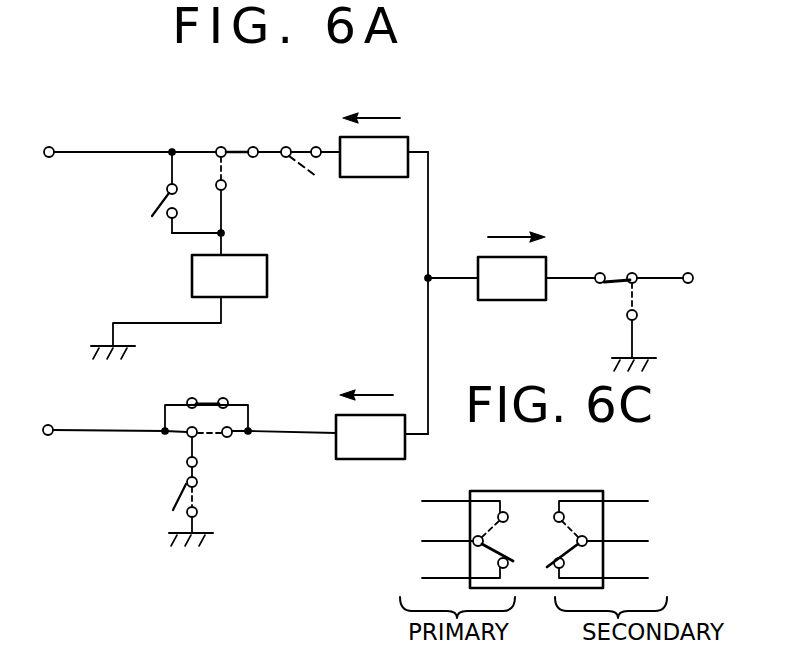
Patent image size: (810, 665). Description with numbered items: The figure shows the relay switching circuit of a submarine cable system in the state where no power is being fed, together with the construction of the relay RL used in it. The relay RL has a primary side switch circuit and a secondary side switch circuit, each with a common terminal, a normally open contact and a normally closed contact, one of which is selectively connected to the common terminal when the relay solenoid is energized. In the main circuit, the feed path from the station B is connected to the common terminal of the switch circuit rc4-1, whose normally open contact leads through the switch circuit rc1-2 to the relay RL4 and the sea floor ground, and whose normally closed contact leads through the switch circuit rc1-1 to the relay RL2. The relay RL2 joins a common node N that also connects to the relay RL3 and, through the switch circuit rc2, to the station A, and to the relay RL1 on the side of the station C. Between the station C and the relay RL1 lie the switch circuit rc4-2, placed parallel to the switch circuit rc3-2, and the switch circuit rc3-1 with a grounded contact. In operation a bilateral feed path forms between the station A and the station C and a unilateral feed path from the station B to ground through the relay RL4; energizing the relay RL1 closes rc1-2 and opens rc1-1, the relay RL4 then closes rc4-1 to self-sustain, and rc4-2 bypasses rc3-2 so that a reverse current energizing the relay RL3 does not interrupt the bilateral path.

In FIG. 6A, the relay RL1 is at (338, 424).
In FIG. 6A, the relay RL2 is at (384, 145).
In FIG. 6A, the relay RL3 is at (487, 266).
In FIG. 6A, the relay RL4 is at (179, 307).
In FIG. 6A, the switch circuit rc1-1 is at (256, 148).
In FIG. 6A, the secondary side switch circuit rc1-2 is at (147, 199).
In FIG. 6A, the switch circuit rc2 is at (619, 310).
In FIG. 6A, the switch circuit rc3-1 is at (184, 506).
In FIG. 6A, the secondary side switch circuit rc3-2 is at (222, 400).
In FIG. 6A, the switch circuit rc4-1 is at (232, 206).
In FIG. 6A, the secondary side switch circuit rc4-2 is at (195, 451).
In FIG. 6C, the relay RL is at (531, 524).
In FIG. 6A, the station A is at (713, 280).
In FIG. 6A, the station B is at (94, 153).
In FIG. 6A, the station C is at (87, 431).
In FIG. 6A, the node N is at (428, 278).